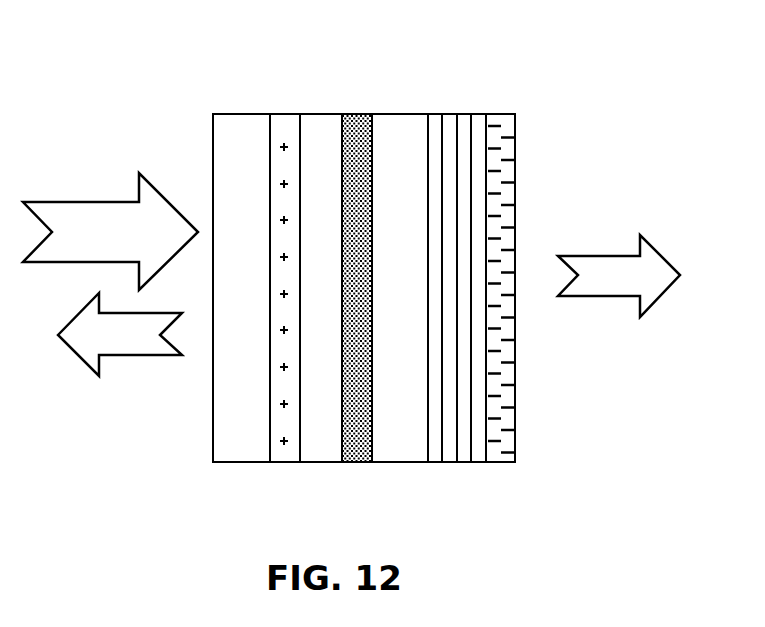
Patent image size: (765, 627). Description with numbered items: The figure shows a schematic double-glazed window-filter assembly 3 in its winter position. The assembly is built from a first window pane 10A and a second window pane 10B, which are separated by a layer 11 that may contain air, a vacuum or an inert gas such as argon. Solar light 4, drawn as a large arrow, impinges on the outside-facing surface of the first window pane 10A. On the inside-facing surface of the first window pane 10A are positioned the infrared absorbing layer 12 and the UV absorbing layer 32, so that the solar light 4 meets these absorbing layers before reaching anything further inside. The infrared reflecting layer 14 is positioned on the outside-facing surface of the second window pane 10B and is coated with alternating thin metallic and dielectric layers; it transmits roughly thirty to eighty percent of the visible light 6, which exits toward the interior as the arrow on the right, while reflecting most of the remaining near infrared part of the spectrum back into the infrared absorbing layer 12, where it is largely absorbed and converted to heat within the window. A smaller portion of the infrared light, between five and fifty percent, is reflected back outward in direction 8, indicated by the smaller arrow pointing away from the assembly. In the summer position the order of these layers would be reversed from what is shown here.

The double-glazed window-filter assembly 3 is at (532, 130).
The solar light 4 is at (67, 200).
The visible light 6 is at (597, 255).
The direction of reflected infrared light 8 is at (148, 357).
The first window pane 10A is at (236, 113).
The second window pane 10B is at (397, 113).
The layer 11 is at (318, 122).
The infrared absorbing layer 12 is at (363, 463).
The infrared reflecting layer 14 is at (451, 463).
The UV absorbing layer 32 is at (496, 113).